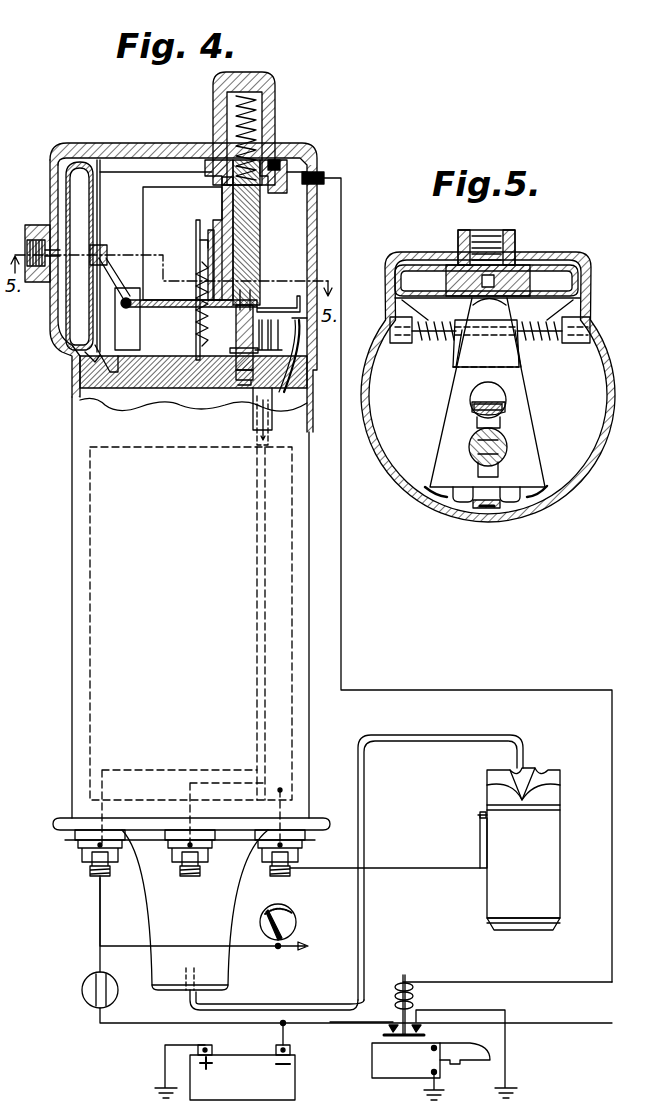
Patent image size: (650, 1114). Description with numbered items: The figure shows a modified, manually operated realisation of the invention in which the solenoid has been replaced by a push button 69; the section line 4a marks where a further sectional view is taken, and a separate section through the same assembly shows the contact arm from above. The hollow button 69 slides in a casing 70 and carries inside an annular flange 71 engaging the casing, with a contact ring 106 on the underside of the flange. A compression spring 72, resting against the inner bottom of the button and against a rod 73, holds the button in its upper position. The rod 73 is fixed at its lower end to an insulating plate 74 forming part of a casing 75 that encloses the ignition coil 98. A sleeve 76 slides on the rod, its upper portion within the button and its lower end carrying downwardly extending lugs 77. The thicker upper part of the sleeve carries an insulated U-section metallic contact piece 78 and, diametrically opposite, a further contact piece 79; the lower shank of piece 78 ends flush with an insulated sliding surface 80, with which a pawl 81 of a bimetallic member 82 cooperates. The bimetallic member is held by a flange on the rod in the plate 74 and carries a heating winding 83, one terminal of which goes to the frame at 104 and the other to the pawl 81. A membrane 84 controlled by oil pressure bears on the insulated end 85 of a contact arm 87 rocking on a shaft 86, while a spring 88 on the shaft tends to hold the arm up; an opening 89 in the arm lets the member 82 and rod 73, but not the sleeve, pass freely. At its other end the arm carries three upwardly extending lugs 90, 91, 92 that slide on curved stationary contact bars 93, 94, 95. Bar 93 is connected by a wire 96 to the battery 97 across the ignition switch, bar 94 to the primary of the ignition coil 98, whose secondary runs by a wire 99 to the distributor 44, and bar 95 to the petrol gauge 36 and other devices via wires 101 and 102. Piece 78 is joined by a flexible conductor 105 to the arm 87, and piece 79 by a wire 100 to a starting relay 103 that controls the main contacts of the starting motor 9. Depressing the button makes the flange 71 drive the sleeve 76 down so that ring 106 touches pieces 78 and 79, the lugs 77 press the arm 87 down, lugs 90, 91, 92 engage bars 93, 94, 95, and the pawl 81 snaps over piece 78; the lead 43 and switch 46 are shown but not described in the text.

In FIG. 4, the section line 4a is at (182, 155).
In FIG. 4, the starting motor 9 is at (372, 1060).
In FIG. 4, the petrol gauge 36 is at (294, 914).
In FIG. 4, the terminal lead 43 is at (322, 868).
In FIG. 4, the distributor 44 is at (550, 836).
In FIG. 4, the switch 46 is at (112, 981).
In FIG. 4, the push button 69 is at (262, 85).
In FIG. 4, the casing 70 is at (316, 150).
In FIG. 4, the annular flange 71 is at (206, 157).
In FIG. 4, the compression spring 72 is at (258, 112).
In FIG. 4, the rod 73 is at (256, 214).
In FIG. 5, the rod 73 is at (500, 438).
In FIG. 4, the insulating plate 74 is at (80, 398).
In FIG. 4, the casing 75 is at (78, 566).
In FIG. 4, the sleeve 76 is at (258, 232).
In FIG. 5, the sleeve 76 is at (470, 452).
In FIG. 4, the lugs 77 is at (262, 262).
In FIG. 5, the lugs 77 is at (510, 450).
In FIG. 4, the metallic contact piece 78 is at (222, 192).
In FIG. 4, the contact piece 79 is at (318, 172).
In FIG. 4, the insulated sliding surface 80 is at (200, 246).
In FIG. 4, the pawl 81 is at (196, 228).
In FIG. 4, the bimetallic member 82 is at (134, 307).
In FIG. 5, the bimetallic member 82 is at (474, 408).
In FIG. 4, the heating winding 83 is at (200, 307).
In FIG. 5, the heating winding 83 is at (470, 402).
In FIG. 4, the membrane 84 is at (80, 200).
In FIG. 5, the membrane 84 is at (526, 300).
In FIG. 4, the insulated end 85 is at (98, 288).
In FIG. 5, the insulated end 85 is at (472, 300).
In FIG. 4, the shaft 86 is at (90, 270).
In FIG. 5, the shaft 86 is at (440, 346).
In FIG. 4, the contact arm 87 is at (218, 318).
In FIG. 5, the contact arm 87 is at (518, 390).
In FIG. 4, the spring 88 is at (88, 352).
In FIG. 5, the spring 88 is at (456, 352).
In FIG. 5, the opening 89 is at (478, 424).
In FIG. 5, the lug 90 is at (540, 490).
In FIG. 4, the lug 91 is at (297, 300).
In FIG. 5, the lug 91 is at (478, 508).
In FIG. 5, the lug 92 is at (428, 490).
In FIG. 4, the contact bar 93 is at (303, 326).
In FIG. 5, the contact bar 93 is at (518, 502).
In FIG. 4, the contact bar 94 is at (300, 355).
In FIG. 5, the contact bar 94 is at (492, 510).
In FIG. 5, the contact bar 95 is at (448, 496).
In FIG. 4, the wire 96 is at (254, 683).
In FIG. 4, the battery 97 is at (298, 1068).
In FIG. 4, the ignition coil 98 is at (118, 640).
In FIG. 4, the wire 99 is at (366, 826).
In FIG. 4, the wire 100 is at (520, 982).
In FIG. 4, the wire 101 is at (272, 408).
In FIG. 4, the wire 102 is at (254, 948).
In FIG. 4, the starting relay 103 is at (414, 1000).
In FIG. 4, the frame connection 104 is at (100, 375).
In FIG. 4, the flexible conductor 105 is at (143, 190).
In FIG. 4, the contact ring 106 is at (276, 158).